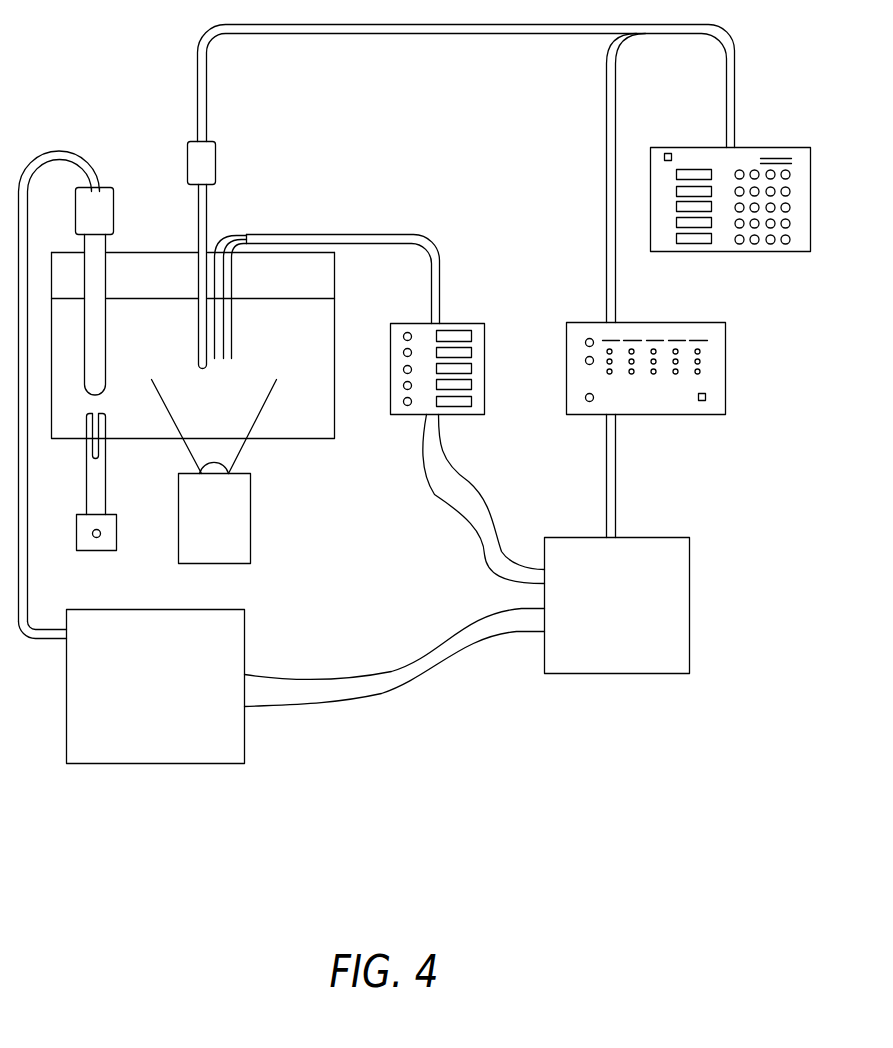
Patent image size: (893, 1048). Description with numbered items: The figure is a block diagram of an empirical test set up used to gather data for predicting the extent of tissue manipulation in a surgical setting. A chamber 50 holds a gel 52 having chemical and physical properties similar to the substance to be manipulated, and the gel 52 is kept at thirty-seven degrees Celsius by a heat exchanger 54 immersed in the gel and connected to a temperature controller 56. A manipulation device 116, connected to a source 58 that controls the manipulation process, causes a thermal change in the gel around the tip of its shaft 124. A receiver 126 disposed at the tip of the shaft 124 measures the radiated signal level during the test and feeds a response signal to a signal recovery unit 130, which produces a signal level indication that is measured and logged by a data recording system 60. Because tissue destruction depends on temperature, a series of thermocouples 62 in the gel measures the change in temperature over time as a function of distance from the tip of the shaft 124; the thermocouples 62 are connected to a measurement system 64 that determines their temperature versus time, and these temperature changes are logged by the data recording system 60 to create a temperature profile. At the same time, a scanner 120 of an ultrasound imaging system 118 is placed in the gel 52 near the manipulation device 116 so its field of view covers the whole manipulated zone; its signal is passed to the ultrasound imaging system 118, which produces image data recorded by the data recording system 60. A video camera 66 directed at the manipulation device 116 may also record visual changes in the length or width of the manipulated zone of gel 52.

The chamber 50 is at (304, 296).
The gel 52 is at (176, 352).
The heat exchanger 54 is at (107, 412).
The temperature controller 56 is at (101, 550).
The source 58 is at (695, 253).
The data recording system 60 is at (677, 597).
The thermocouples 62 is at (230, 315).
The measurement system 64 is at (477, 413).
The video camera 66 is at (237, 506).
The manipulation device 116 is at (273, 168).
The ultrasound imaging system 118 is at (240, 650).
The scanner 120 is at (108, 203).
The shaft 124 is at (201, 220).
The receiver 126 is at (198, 366).
The signal recovery unit 130 is at (724, 334).